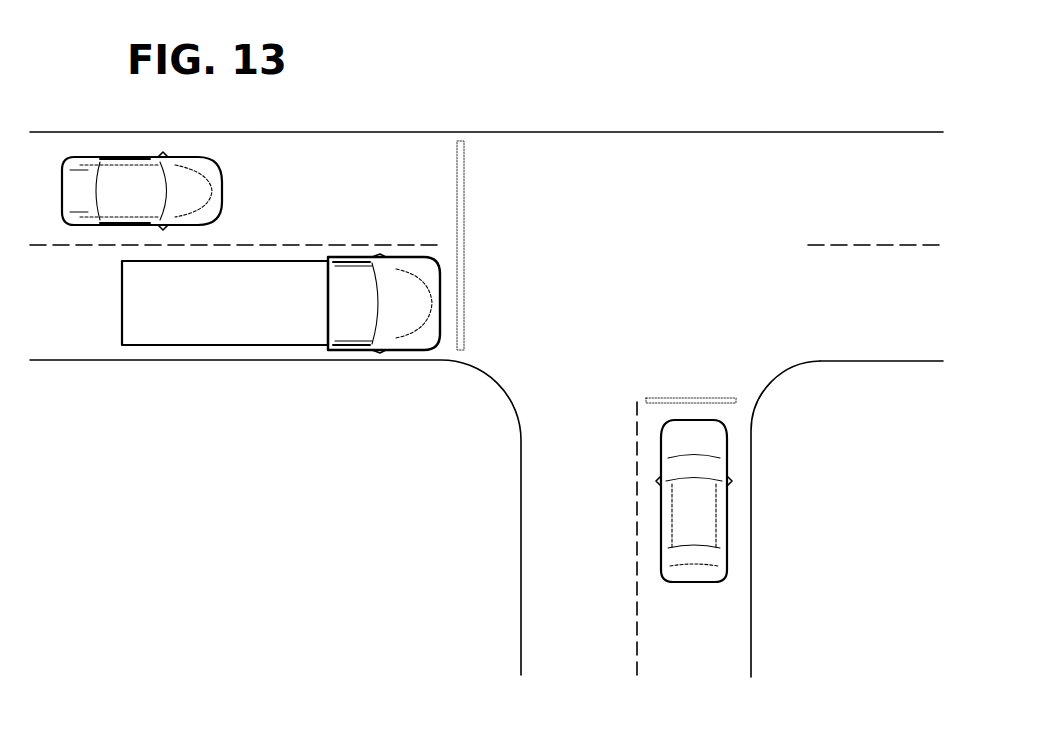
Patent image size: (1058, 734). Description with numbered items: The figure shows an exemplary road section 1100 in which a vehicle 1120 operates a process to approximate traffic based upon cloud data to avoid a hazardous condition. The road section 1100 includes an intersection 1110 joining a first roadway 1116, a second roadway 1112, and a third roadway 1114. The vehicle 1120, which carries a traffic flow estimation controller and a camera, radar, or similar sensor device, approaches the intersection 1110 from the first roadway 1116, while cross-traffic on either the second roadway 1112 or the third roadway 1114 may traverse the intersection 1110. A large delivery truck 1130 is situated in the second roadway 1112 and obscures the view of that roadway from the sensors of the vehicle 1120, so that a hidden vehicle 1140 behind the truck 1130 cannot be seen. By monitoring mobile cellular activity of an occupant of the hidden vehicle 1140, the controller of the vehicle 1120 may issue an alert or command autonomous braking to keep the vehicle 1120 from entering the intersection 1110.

The road section 1100 is at (822, 100).
The intersection 1110 is at (576, 165).
The second roadway 1112 is at (72, 340).
The third roadway 1114 is at (880, 313).
The first roadway 1116 is at (722, 622).
The vehicle 1120 is at (700, 518).
The large delivery truck 1130 is at (234, 320).
The hidden vehicle 1140 is at (126, 183).